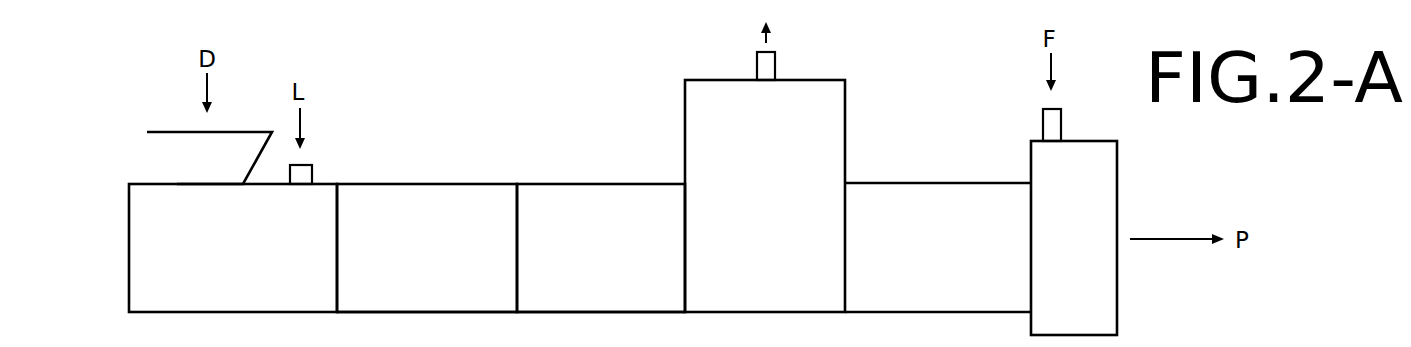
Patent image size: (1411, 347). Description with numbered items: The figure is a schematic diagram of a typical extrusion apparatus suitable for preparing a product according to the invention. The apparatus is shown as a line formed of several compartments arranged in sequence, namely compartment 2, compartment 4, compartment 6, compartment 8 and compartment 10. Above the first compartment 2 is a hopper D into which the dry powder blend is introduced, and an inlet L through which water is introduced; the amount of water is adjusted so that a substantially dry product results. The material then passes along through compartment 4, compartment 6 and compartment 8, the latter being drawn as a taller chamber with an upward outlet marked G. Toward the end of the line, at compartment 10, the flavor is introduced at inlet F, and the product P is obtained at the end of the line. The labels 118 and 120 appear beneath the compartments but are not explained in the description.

The compartment 2 is at (142, 263).
The compartment 4 is at (415, 195).
The compartment 6 is at (553, 198).
The compartment 8 is at (817, 170).
The compartment 10 is at (928, 197).
The extruder zone 118 is at (427, 329).
The extruder zone 120 is at (601, 329).